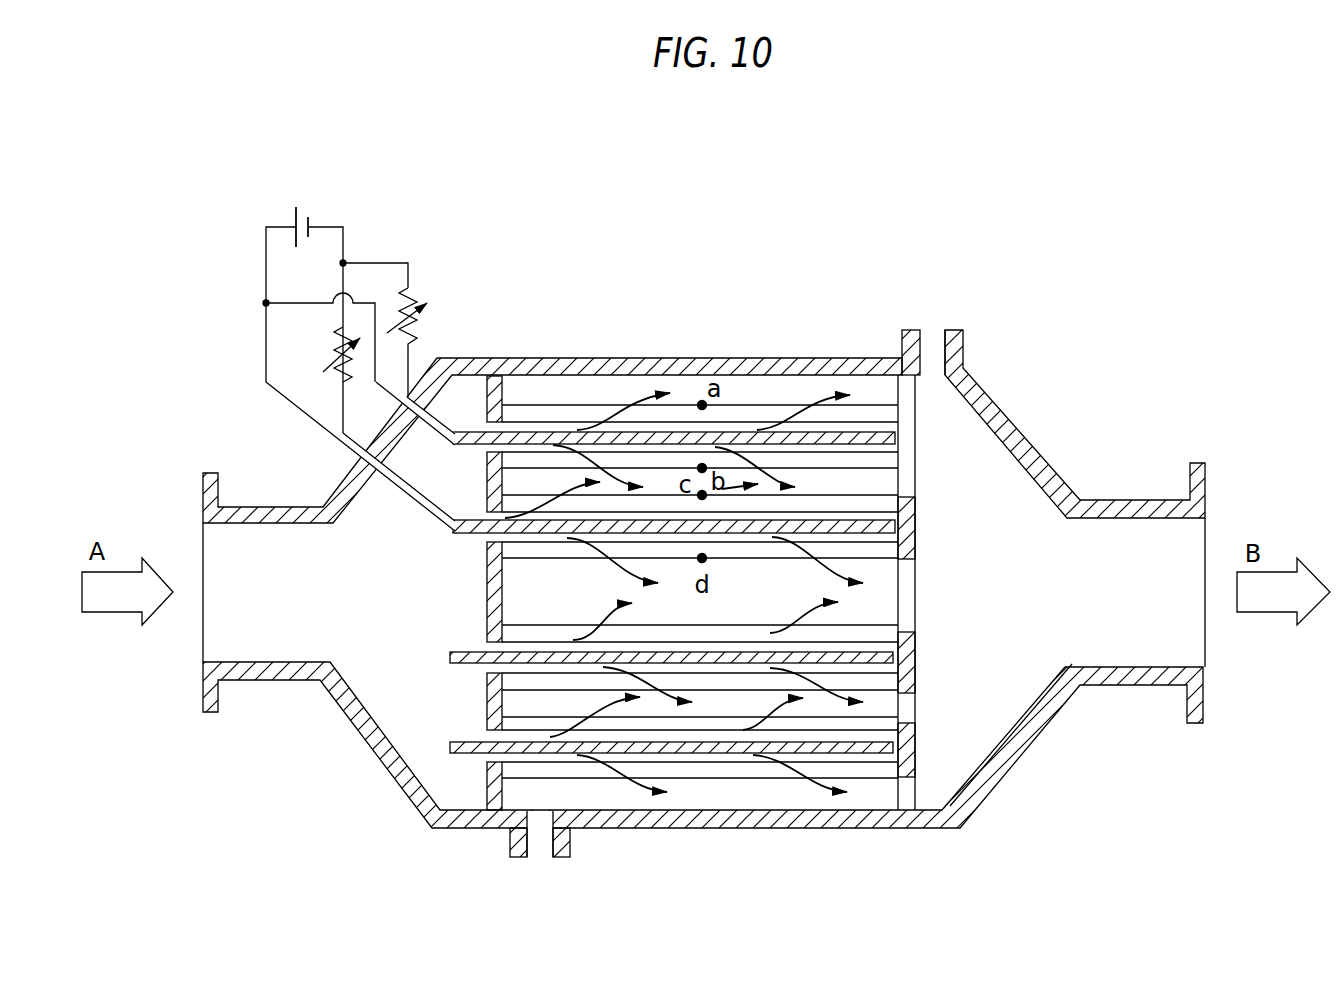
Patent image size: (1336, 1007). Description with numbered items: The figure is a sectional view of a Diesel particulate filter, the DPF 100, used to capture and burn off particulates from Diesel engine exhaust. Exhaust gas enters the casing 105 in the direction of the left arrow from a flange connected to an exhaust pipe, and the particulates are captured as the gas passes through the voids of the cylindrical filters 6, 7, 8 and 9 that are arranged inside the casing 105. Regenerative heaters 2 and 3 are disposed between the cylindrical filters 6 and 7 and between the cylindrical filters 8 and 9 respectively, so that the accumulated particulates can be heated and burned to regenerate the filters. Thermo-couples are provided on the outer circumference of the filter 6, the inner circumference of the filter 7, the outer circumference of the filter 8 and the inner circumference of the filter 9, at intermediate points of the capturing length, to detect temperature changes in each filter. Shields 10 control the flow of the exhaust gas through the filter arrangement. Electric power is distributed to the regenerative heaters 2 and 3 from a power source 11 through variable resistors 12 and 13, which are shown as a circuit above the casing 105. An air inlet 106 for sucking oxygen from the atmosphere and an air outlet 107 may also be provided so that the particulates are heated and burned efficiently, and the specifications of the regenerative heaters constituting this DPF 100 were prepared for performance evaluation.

The DPF 100 is at (784, 356).
The casing 105 is at (637, 366).
The air inlet 106 is at (533, 852).
The air outlet 107 is at (933, 330).
The cylindrical filter 7 is at (518, 455).
The cylindrical filter 6 is at (553, 417).
The shield 10 is at (485, 697).
The regenerative heater 3 is at (452, 658).
The regenerative heater 2 is at (463, 753).
The cylindrical filter 8 is at (700, 682).
The cylindrical filter 9 is at (733, 637).
The power source 11 is at (303, 203).
The variable resistor 12 is at (340, 340).
The variable resistor 13 is at (409, 288).